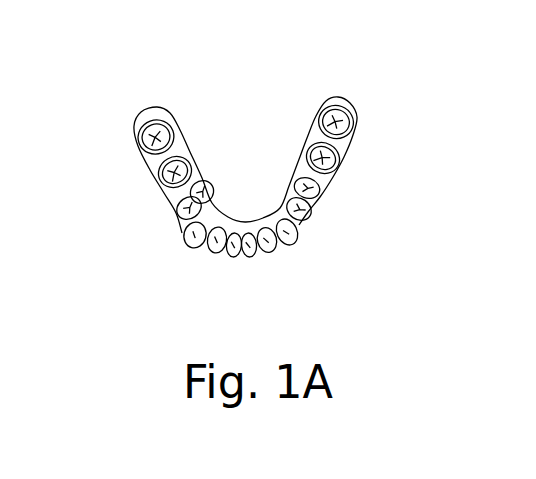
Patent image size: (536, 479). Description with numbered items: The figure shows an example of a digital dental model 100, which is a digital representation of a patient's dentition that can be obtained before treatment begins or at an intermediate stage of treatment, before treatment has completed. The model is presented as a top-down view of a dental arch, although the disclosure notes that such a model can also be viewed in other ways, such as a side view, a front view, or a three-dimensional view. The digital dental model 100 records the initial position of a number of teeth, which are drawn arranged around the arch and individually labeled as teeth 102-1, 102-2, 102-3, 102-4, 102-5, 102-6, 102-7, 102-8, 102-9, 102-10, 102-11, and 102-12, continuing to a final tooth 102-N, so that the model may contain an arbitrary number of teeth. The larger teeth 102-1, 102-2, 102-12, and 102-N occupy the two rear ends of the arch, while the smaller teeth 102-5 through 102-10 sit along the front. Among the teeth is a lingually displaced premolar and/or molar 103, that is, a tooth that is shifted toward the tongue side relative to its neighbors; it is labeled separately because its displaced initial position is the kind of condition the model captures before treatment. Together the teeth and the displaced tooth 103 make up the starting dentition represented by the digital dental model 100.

The digital dental model 100 is at (126, 76).
The lingually displaced premolar and/or molar 103 is at (213, 178).
The tooth 102-N is at (172, 128).
The tooth 102-12 is at (152, 181).
The tooth 102-11 is at (177, 215).
The tooth 102-10 is at (190, 246).
The tooth 102-9 is at (207, 250).
The tooth 102-8 is at (228, 254).
The tooth 102-7 is at (253, 252).
The tooth 102-6 is at (284, 252).
The tooth 102-5 is at (290, 243).
The tooth 102-4 is at (311, 213).
The tooth 102-3 is at (323, 189).
The tooth 102-2 is at (343, 160).
The tooth 102-1 is at (357, 122).